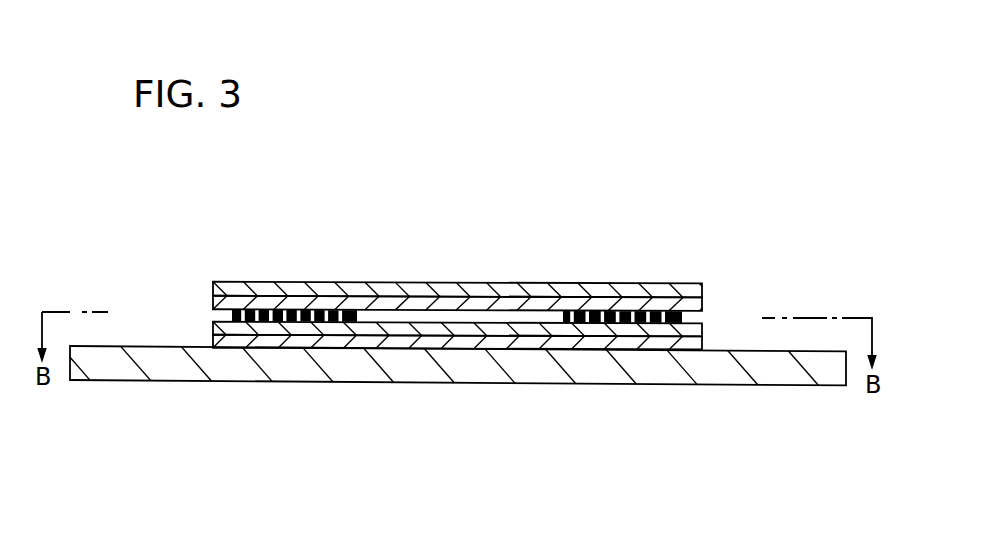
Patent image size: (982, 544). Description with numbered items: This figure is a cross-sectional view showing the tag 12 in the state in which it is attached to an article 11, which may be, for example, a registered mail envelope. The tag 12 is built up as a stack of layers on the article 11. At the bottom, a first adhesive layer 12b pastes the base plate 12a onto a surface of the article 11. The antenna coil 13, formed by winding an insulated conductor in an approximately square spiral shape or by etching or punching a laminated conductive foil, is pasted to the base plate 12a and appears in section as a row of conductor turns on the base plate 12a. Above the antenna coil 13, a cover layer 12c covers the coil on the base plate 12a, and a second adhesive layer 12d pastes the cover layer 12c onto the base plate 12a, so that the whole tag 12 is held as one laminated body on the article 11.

The article 11 is at (449, 413).
The tag 12 is at (454, 326).
The base plate 12a is at (213, 328).
The first adhesive layer 12b is at (702, 347).
The cover layer 12c is at (277, 281).
The second adhesive layer 12d is at (213, 297).
The antenna coil 13 is at (702, 318).